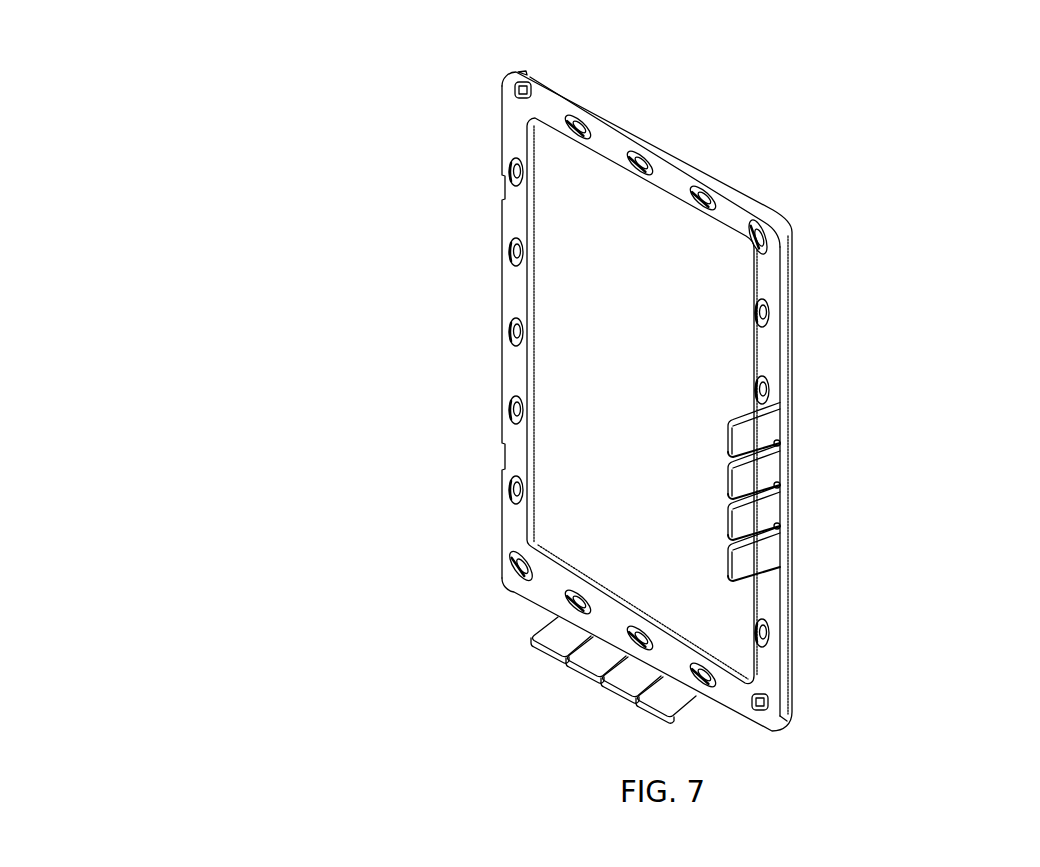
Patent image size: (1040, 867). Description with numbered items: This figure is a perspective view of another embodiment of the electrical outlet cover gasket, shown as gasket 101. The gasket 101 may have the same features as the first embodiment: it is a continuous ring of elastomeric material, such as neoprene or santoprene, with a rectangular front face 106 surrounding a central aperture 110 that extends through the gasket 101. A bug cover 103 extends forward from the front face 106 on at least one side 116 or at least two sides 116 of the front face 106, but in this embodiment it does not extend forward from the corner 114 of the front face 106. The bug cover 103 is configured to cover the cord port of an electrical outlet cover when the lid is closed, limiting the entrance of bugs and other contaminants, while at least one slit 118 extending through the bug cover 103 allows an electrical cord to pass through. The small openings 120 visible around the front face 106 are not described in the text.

The gasket 101 is at (405, 232).
The bug cover 103 is at (750, 427).
The front face 106 is at (517, 293).
The central aperture 110 is at (603, 383).
The corner 114 is at (794, 717).
The side 116 is at (787, 365).
The slit 118 is at (780, 525).
The mounting slots 120 is at (760, 300).